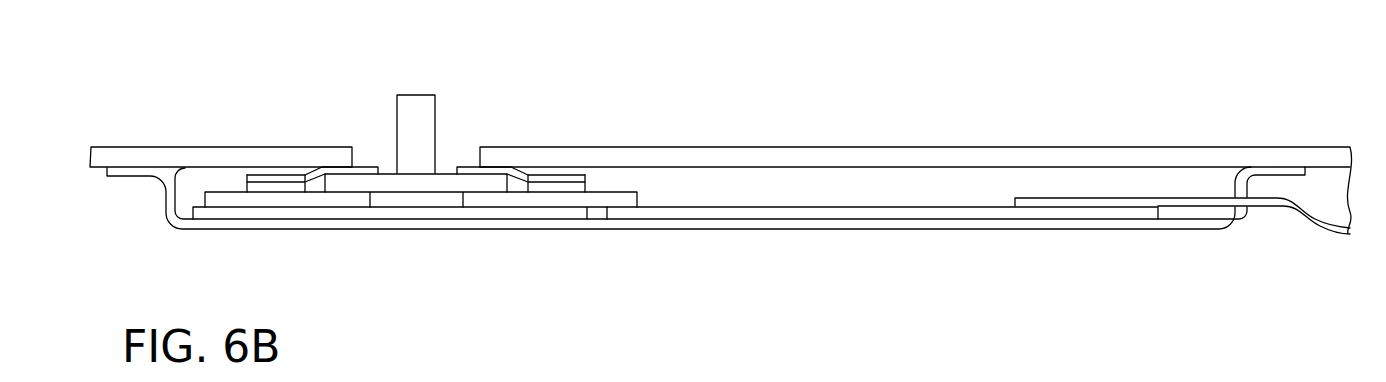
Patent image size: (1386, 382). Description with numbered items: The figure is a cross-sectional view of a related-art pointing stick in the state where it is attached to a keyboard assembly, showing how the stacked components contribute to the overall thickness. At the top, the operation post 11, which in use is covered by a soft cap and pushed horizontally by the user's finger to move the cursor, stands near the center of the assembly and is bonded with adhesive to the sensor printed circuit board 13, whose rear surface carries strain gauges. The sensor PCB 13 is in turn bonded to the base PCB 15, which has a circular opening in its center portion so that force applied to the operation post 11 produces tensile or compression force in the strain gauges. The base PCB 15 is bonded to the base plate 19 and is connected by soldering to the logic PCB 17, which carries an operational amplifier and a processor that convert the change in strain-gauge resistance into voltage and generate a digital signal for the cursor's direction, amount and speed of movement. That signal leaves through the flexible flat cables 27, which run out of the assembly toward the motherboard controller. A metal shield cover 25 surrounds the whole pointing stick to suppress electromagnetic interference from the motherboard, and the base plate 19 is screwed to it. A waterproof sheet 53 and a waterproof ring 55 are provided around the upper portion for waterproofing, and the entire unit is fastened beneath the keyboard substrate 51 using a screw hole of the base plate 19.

The operation post 11 is at (432, 93).
The sensor printed circuit board 13 is at (447, 182).
The base PCB 15 is at (222, 196).
The logic PCB 17 is at (848, 212).
The base plate 19 is at (482, 214).
The metal shield cover 25 is at (357, 231).
The flexible flat cables 27 is at (1303, 212).
The keyboard substrate 51 is at (116, 147).
The waterproof sheet 53 is at (337, 170).
The waterproof ring 55 is at (275, 187).